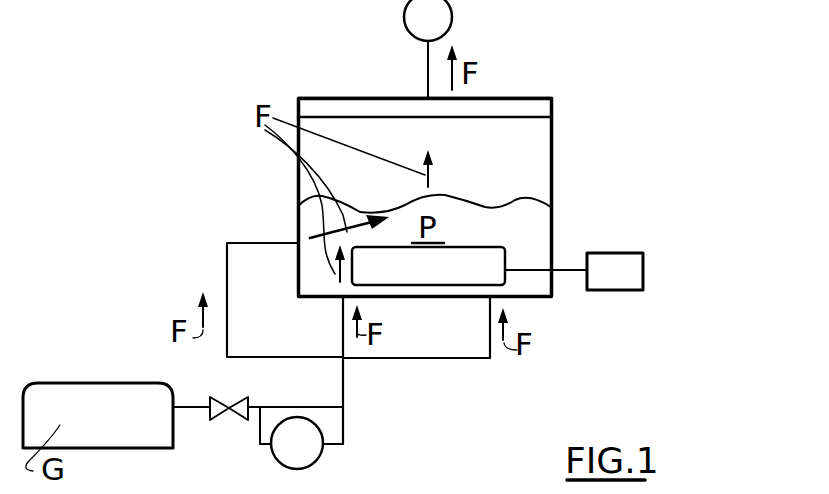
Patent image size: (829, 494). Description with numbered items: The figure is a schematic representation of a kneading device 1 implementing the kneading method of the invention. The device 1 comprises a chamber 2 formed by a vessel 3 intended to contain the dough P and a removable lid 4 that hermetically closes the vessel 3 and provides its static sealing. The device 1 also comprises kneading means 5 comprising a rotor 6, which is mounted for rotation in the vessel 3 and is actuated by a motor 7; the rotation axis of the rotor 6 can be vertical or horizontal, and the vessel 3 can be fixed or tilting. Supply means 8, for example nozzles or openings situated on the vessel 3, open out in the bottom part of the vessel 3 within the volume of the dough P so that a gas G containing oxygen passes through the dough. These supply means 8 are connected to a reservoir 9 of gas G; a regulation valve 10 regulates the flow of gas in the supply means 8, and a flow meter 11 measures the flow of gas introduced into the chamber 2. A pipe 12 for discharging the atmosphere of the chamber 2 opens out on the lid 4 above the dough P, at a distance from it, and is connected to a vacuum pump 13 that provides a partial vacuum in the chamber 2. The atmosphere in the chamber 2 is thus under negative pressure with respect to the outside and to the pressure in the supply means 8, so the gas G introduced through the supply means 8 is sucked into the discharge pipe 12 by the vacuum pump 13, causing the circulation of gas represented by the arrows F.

The kneading device 1 is at (642, 131).
The chamber 2 is at (283, 170).
The vessel 3 is at (296, 193).
The removable lid 4 is at (340, 97).
The kneading means 5 is at (518, 254).
The rotor 6 is at (456, 266).
The motor 7 is at (574, 272).
The supply means 8 is at (342, 337).
The reservoir of gas 9 is at (108, 429).
The regulation valve 10 is at (229, 420).
The flow meter 11 is at (301, 438).
The discharge pipe 12 is at (425, 77).
The vacuum pump 13 is at (428, 20).